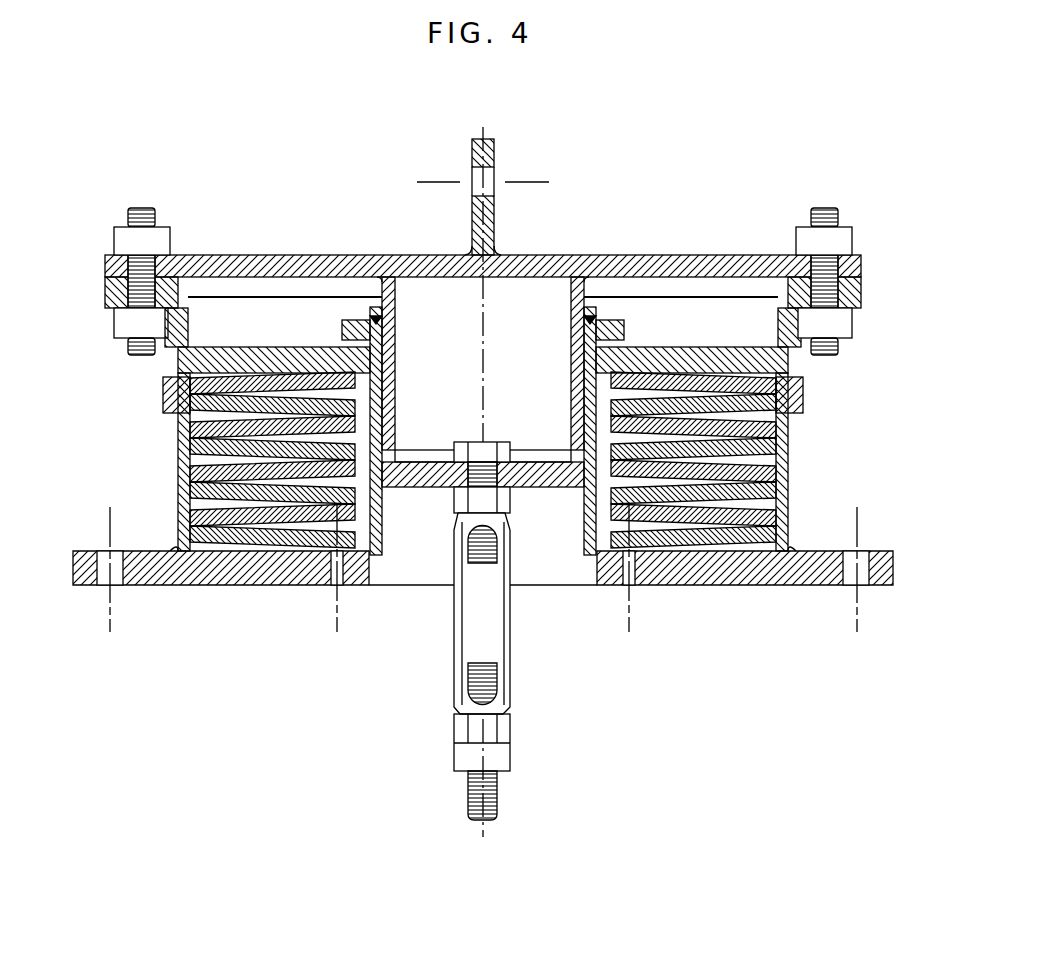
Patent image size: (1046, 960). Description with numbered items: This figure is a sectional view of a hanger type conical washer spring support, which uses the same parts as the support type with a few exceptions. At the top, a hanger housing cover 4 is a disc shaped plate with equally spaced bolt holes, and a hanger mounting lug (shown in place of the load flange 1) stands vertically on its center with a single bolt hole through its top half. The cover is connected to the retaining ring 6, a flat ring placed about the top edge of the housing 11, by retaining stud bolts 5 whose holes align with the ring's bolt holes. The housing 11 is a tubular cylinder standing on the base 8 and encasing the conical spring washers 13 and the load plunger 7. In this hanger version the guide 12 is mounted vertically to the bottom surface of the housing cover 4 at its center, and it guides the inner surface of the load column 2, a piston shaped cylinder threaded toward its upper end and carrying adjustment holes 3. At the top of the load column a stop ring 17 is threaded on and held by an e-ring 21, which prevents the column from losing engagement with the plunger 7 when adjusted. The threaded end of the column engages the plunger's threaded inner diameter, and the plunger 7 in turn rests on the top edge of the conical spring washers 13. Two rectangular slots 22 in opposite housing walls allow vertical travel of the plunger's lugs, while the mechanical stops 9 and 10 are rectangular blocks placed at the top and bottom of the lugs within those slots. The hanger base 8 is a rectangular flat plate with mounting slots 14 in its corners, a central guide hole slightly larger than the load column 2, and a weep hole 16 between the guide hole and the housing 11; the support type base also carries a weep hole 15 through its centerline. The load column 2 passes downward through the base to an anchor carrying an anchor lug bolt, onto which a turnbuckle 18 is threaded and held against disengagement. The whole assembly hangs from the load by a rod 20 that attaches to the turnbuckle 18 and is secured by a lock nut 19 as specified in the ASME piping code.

The load flange 1 is at (495, 150).
The load column 2 is at (383, 505).
The adjustment holes 3 is at (455, 446).
The housing cover 4 is at (690, 254).
The retaining stud bolts 5 is at (838, 212).
The retaining ring 6 is at (105, 290).
The load plunger 7 is at (252, 347).
The base 8 is at (893, 552).
The mechanical stop 9 is at (801, 347).
The mechanical stop 10 is at (803, 395).
The housing 11 is at (178, 447).
The guide 12 is at (570, 383).
The conical spring washers 13 is at (583, 413).
The mounting slots 14 is at (108, 587).
The weep hole 15 is at (520, 489).
The weep hole 16 is at (632, 587).
The stop ring 17 is at (622, 336).
The turnbuckle 18 is at (454, 604).
The lock nut 19 is at (454, 758).
The rod 20 is at (468, 797).
The e-ring 21 is at (594, 318).
The rectangular slots 22 is at (780, 299).